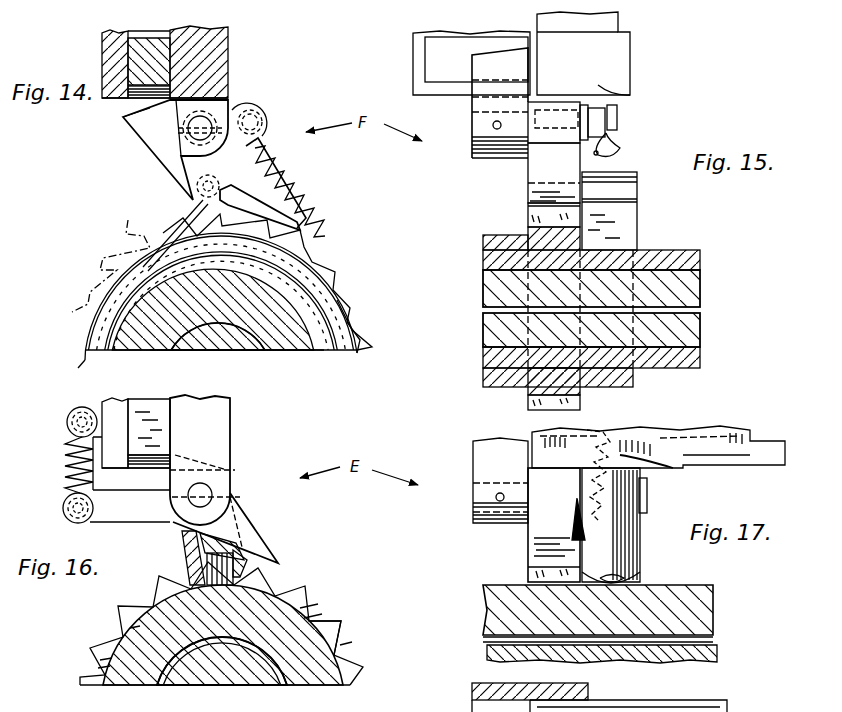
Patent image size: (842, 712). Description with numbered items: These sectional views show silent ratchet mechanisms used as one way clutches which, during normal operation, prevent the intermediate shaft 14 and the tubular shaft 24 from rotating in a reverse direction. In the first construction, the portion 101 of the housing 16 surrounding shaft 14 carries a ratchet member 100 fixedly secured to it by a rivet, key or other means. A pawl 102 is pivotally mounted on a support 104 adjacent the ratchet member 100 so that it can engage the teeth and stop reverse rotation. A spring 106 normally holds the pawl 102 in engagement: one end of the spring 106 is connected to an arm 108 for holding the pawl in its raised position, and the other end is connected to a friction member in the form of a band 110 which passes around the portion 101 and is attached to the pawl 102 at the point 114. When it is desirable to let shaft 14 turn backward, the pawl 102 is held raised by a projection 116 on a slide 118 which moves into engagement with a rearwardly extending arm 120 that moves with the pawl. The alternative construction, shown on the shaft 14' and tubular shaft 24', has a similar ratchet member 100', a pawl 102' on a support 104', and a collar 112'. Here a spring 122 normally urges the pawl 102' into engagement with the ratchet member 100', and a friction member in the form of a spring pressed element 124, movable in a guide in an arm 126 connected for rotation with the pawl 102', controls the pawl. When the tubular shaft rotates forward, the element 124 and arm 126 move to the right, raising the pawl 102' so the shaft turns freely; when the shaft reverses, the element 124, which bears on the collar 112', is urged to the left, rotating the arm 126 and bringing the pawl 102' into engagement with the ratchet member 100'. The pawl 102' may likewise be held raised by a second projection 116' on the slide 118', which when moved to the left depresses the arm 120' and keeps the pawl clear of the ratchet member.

In FIG. 14, the intermediate shaft 14 is at (229, 354).
In FIG. 15, the housing 16 is at (704, 371).
In FIG. 14, the tubular shaft 24 is at (245, 368).
In FIG. 15, the tubular shaft 24 is at (624, 309).
In FIG. 14, the ratchet member 100 is at (257, 280).
In FIG. 15, the ratchet member 100 is at (528, 307).
In FIG. 14, the portion of the housing 101 is at (358, 330).
In FIG. 15, the portion of the housing 101 is at (702, 261).
In FIG. 14, the pawl 102 is at (235, 185).
In FIG. 15, the pawl 102 is at (526, 125).
In FIG. 14, the support 104 is at (189, 62).
In FIG. 15, the support 104 is at (445, 63).
In FIG. 14, the spring 106 is at (322, 205).
In FIG. 15, the spring 106 is at (623, 143).
In FIG. 14, the arm 108 is at (265, 105).
In FIG. 15, the arm 108 is at (472, 105).
In FIG. 14, the band 110 is at (362, 354).
In FIG. 15, the band 110 is at (627, 212).
In FIG. 14, the point of attachment 114 is at (197, 184).
In FIG. 14, the projection 116 is at (128, 111).
In FIG. 15, the projection 116 is at (642, 90).
In FIG. 14, the slide 118 is at (149, 48).
In FIG. 15, the slide 118 is at (611, 53).
In FIG. 14, the rearwardly extending arm 120 is at (131, 130).
In FIG. 16, the spring 122 is at (65, 480).
In FIG. 17, the spring 122 is at (650, 465).
In FIG. 16, the spring pressed element 124 is at (200, 577).
In FIG. 17, the spring pressed element 124 is at (633, 567).
In FIG. 16, the arm 126 is at (182, 536).
In FIG. 17, the arm 126 is at (630, 532).
In FIG. 16, the shaft 14' is at (229, 674).
In FIG. 17, the shaft 14' is at (625, 653).
In FIG. 16, the tubular shaft 24' is at (251, 635).
In FIG. 17, the tubular shaft 24' is at (620, 613).
In FIG. 16, the ratchet member 100' is at (205, 620).
In FIG. 17, the ratchet member 100' is at (523, 573).
In FIG. 16, the pawl 102' is at (251, 479).
In FIG. 17, the pawl 102' is at (529, 525).
In FIG. 16, the support 104' is at (191, 433).
In FIG. 17, the support 104' is at (478, 480).
In FIG. 16, the collar 112' is at (331, 622).
In FIG. 16, the second projection 116' is at (134, 475).
In FIG. 17, the second projection 116' is at (668, 476).
In FIG. 16, the slide 118' is at (155, 413).
In FIG. 17, the slide 118' is at (658, 461).
In FIG. 16, the arm 120' is at (188, 447).